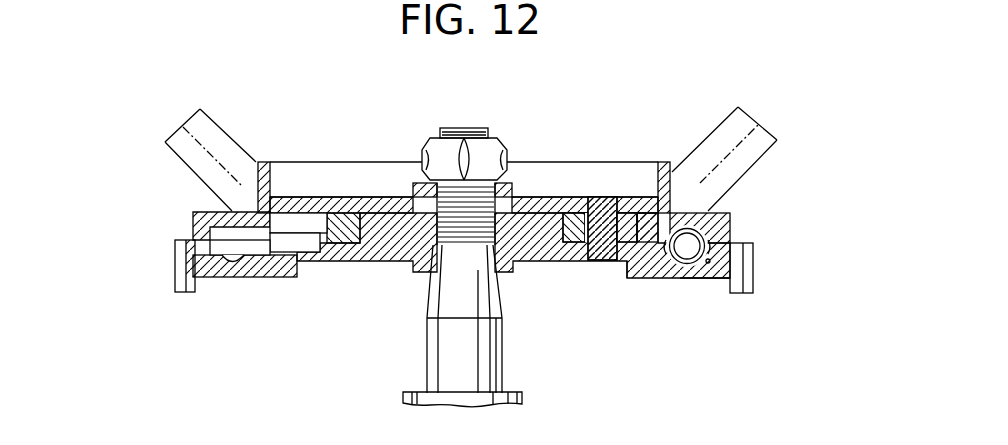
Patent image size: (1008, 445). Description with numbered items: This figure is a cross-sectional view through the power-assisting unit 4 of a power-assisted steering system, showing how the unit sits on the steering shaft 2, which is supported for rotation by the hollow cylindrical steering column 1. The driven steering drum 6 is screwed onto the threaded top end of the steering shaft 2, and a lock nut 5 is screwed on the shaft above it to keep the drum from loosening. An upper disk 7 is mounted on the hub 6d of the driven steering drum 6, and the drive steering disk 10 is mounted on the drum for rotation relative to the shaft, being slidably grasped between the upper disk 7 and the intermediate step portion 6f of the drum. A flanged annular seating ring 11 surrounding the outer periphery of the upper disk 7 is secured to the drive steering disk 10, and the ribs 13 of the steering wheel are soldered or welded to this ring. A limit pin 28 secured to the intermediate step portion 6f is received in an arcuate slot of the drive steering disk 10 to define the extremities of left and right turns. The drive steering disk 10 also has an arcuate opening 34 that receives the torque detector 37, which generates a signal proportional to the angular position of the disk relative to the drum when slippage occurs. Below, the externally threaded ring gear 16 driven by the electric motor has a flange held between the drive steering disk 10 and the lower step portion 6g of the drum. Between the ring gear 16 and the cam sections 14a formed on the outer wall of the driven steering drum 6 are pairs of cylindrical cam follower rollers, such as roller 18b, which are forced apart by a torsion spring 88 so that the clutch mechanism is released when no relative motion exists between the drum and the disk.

The steering column 1 is at (522, 402).
The steering shaft 2 is at (490, 358).
The power-assisting unit 4 is at (536, 148).
The lock nut 5 is at (493, 148).
The driven steering drum 6 is at (565, 258).
The hub 6d is at (415, 183).
The intermediate step portion 6f is at (641, 205).
The lower step portion 6g is at (710, 264).
The upper disk 7 is at (348, 203).
The drive steering disk 10 is at (195, 232).
The flanged annular seating ring 11 is at (730, 218).
The ribs 13 is at (745, 174).
The cam sections 14a is at (634, 278).
The ring gear 16 is at (187, 252).
The cam follower roller 18b is at (230, 250).
The limit pin 28 is at (601, 205).
The opening 34 is at (295, 222).
The torque detector 37 is at (290, 243).
The torsion spring 88 is at (670, 262).